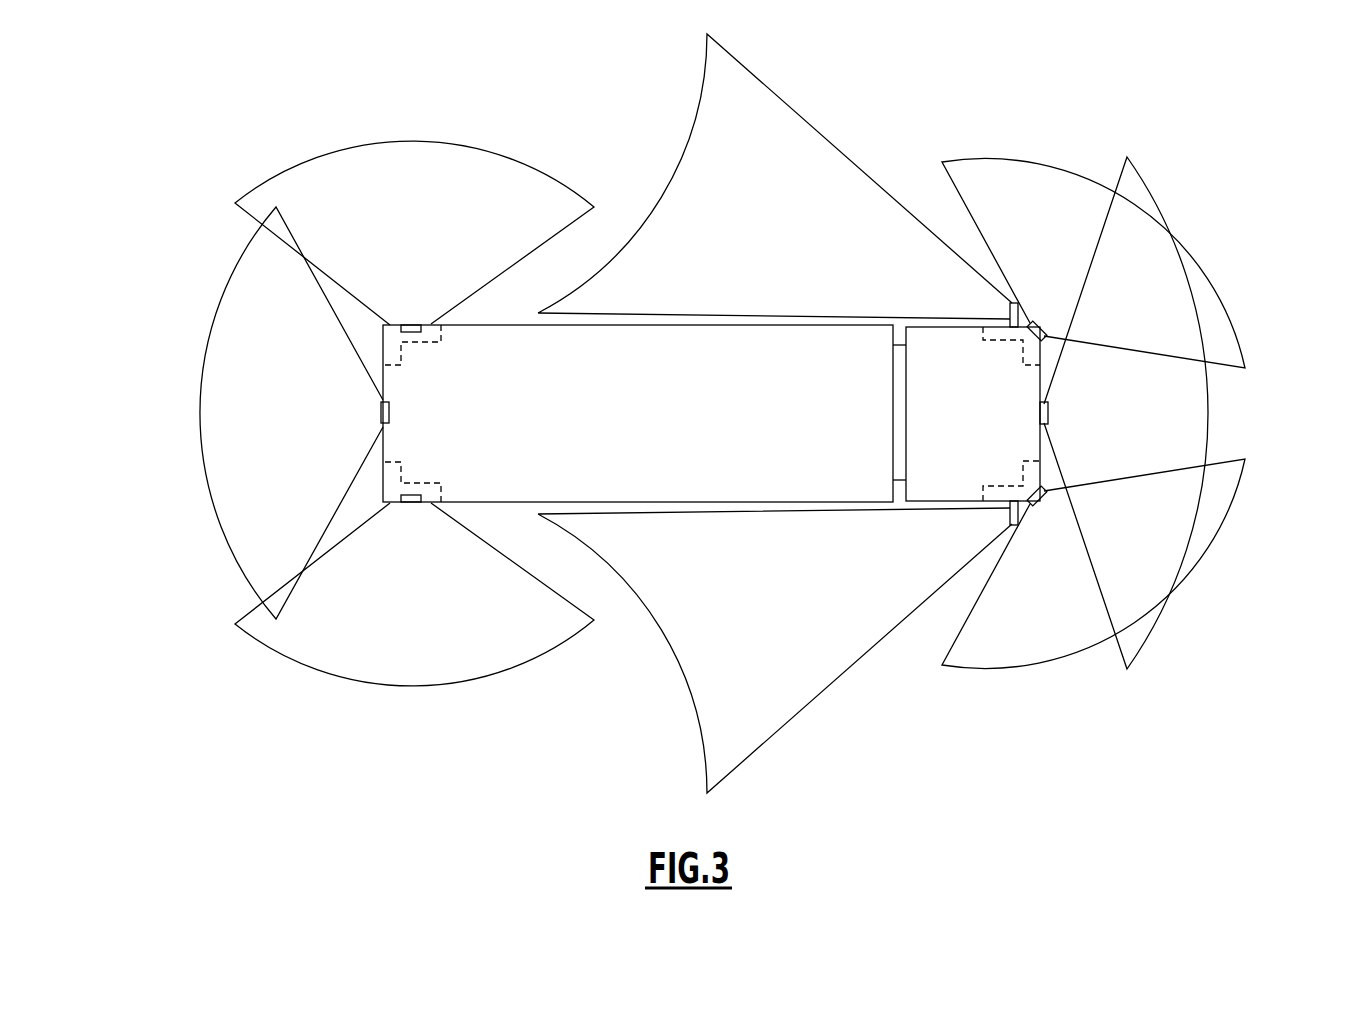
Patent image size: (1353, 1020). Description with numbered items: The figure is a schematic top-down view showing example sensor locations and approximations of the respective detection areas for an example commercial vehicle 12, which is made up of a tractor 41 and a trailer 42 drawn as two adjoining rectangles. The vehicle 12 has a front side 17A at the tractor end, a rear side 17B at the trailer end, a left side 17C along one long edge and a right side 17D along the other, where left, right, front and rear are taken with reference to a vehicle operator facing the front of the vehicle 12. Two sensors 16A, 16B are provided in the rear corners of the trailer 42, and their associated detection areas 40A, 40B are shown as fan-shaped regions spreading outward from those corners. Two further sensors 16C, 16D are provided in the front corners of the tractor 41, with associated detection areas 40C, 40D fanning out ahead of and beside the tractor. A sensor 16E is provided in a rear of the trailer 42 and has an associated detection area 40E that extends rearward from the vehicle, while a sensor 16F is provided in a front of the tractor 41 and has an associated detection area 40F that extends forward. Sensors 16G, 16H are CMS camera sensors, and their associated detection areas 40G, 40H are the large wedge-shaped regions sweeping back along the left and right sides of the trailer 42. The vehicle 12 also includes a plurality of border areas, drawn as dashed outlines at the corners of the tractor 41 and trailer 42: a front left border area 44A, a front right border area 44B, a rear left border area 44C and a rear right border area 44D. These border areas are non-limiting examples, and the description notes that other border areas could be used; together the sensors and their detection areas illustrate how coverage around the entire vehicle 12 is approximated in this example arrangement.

The commercial vehicle 12 is at (1207, 63).
The sensor 16A is at (414, 332).
The sensor 16B is at (414, 495).
The sensor 16C is at (1027, 332).
The sensor 16D is at (1030, 496).
The sensor 16E is at (390, 413).
The sensor 16F is at (1048, 413).
The CMS camera sensor 16G is at (1010, 312).
The CMS camera sensor 16H is at (1010, 522).
The front side 17A is at (1240, 412).
The rear side 17B is at (171, 423).
The left side 17C is at (828, 104).
The right side 17D is at (828, 722).
The detection area 40A is at (378, 239).
The detection area 40B is at (371, 627).
The detection area 40C is at (1011, 226).
The detection area 40D is at (1023, 613).
The detection area 40E is at (255, 424).
The detection area 40F is at (1130, 428).
The detection area 40G is at (690, 221).
The detection area 40H is at (691, 612).
The tractor 41 is at (916, 434).
The trailer 42 is at (637, 426).
The front left border area 44A is at (1000, 333).
The front right border area 44B is at (1003, 489).
The rear left border area 44C is at (392, 343).
The rear right border area 44D is at (395, 472).